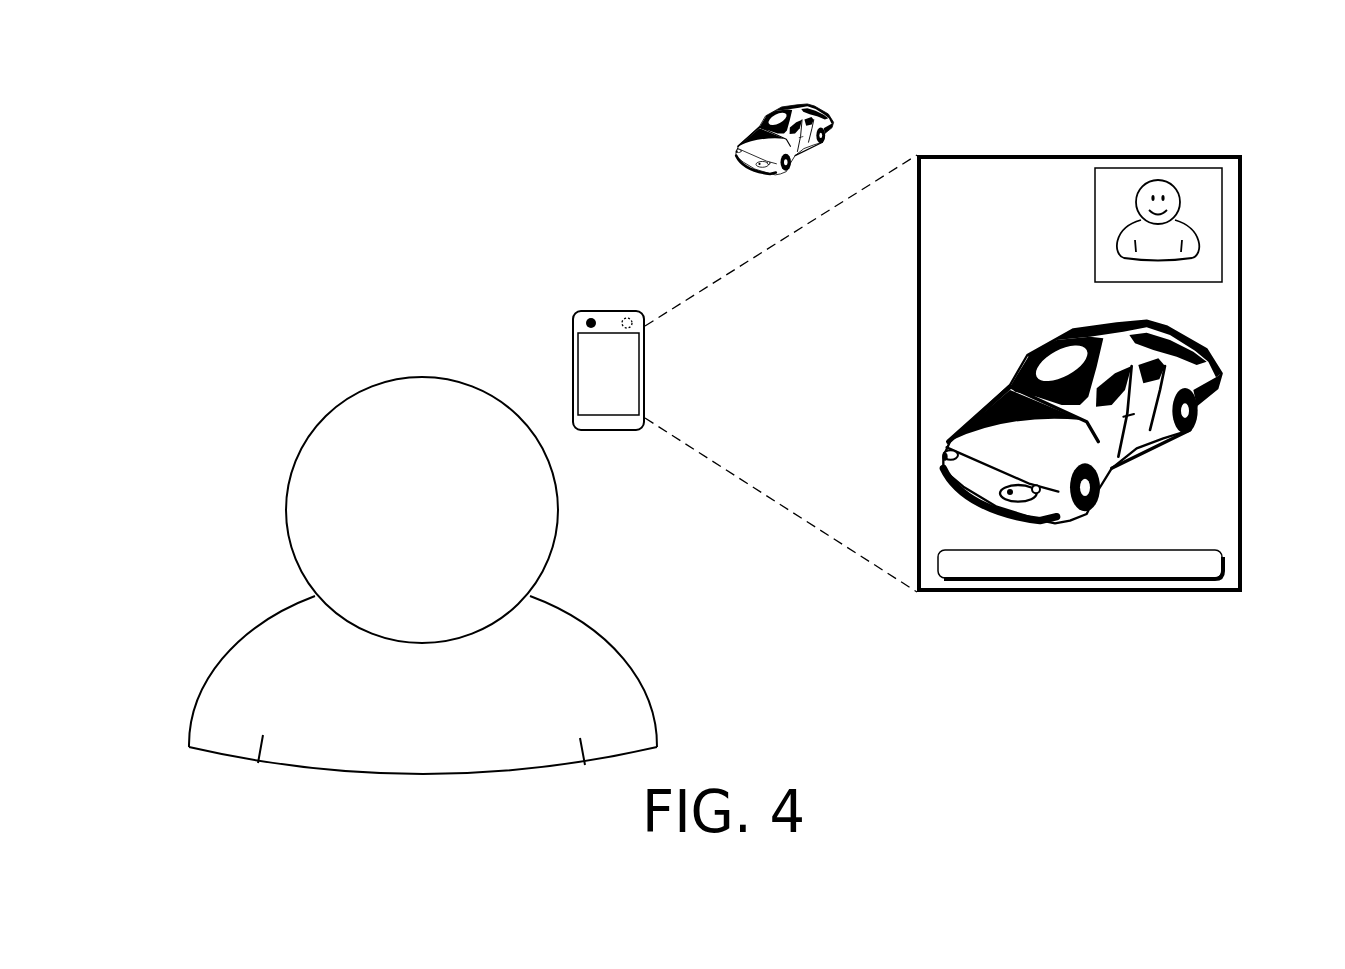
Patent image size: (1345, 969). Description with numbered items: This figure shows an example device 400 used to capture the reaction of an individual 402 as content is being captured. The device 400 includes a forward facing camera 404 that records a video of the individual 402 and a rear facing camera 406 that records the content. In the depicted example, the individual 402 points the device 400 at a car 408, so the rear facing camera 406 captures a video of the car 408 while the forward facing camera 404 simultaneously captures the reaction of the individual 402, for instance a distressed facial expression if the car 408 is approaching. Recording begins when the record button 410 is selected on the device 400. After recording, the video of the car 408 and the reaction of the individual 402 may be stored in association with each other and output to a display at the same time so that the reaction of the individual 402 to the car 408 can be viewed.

The device 400 is at (640, 300).
The individual 402 is at (266, 438).
The forward facing camera 404 is at (589, 316).
The rear facing camera 406 is at (624, 316).
The car 408 is at (746, 100).
The record button 410 is at (1081, 550).